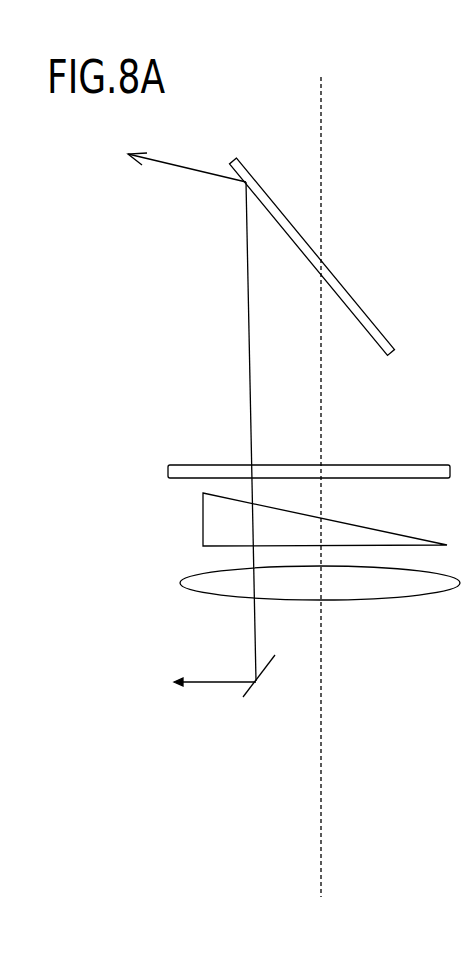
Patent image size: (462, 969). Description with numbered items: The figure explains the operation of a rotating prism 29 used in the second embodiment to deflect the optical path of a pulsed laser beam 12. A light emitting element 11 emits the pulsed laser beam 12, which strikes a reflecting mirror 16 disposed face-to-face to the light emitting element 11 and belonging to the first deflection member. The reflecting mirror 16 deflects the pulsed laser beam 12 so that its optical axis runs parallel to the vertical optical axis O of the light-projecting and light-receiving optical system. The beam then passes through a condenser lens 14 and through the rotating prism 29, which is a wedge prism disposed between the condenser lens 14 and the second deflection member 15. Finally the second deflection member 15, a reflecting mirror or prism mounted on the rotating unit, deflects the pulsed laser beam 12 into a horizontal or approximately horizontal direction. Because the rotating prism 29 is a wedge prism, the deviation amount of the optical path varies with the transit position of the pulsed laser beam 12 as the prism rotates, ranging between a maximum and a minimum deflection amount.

The optical axis O is at (321, 170).
The second deflection member 15 is at (363, 310).
The pulsed laser beam 12 is at (250, 353).
The rotating prism 29 is at (203, 528).
The condenser lens 14 is at (408, 598).
The light emitting element 11 is at (181, 686).
The reflecting mirror 16 is at (245, 702).